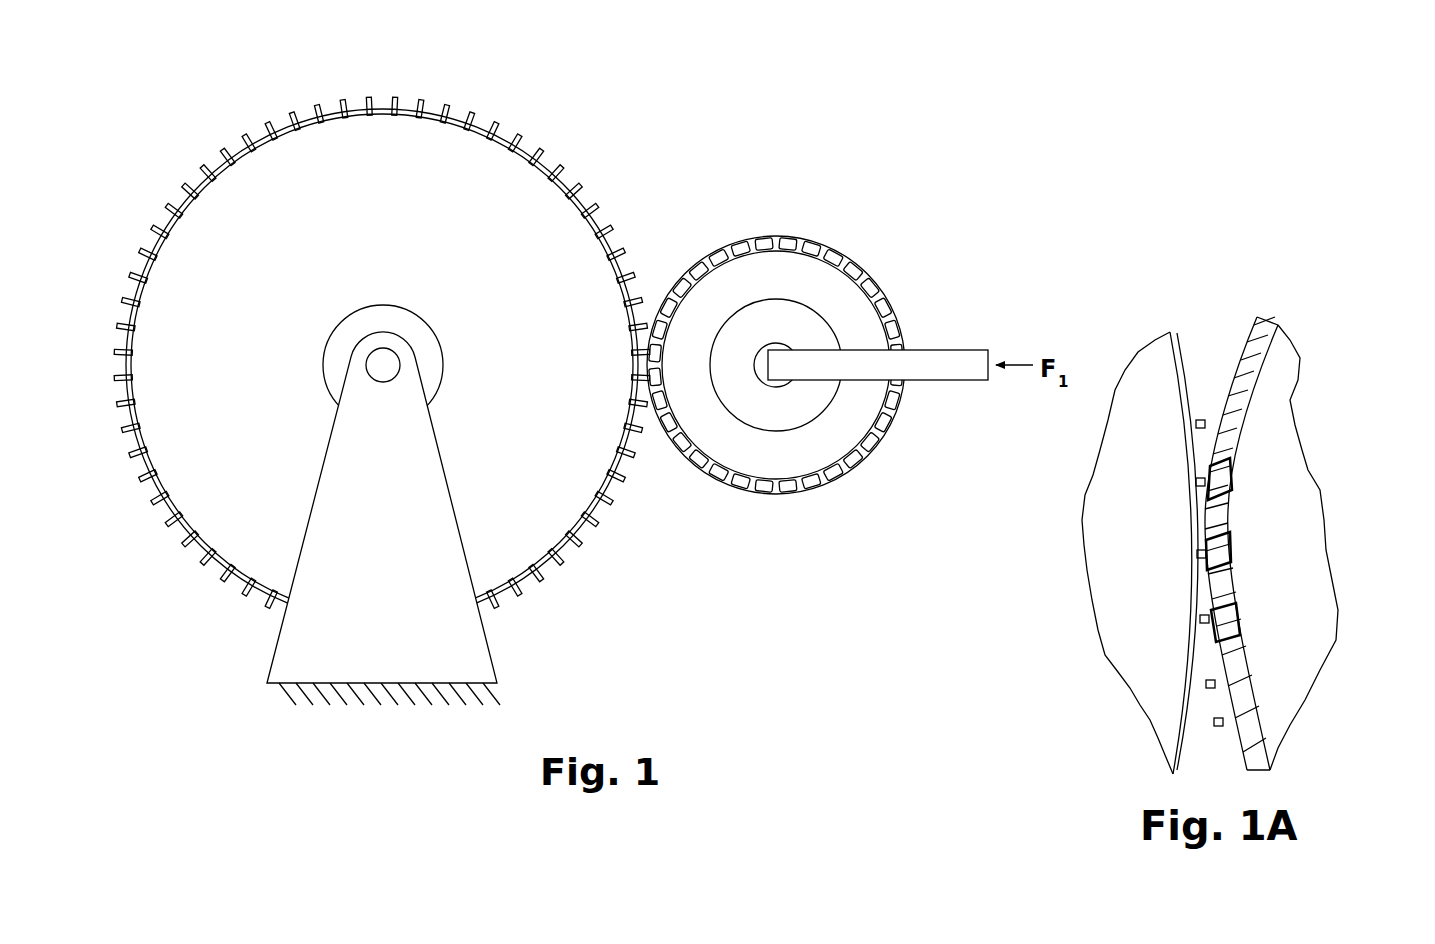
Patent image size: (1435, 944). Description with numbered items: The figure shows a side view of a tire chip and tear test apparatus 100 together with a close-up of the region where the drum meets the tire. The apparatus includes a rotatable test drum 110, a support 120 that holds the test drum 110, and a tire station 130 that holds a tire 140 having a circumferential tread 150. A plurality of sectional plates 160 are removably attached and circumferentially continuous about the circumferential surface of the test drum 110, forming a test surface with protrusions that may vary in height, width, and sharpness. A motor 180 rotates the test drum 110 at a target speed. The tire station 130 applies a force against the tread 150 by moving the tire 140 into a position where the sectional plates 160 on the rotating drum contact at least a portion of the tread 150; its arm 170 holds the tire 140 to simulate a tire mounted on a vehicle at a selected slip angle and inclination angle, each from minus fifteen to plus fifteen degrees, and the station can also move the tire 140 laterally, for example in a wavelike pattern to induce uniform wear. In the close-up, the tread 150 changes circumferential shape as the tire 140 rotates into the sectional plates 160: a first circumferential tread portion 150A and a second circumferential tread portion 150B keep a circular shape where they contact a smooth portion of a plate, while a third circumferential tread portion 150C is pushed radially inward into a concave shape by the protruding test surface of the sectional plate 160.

In FIG. 1, the tire chip and tear test apparatus 100 is at (210, 123).
In FIG. 1, the rotatable test drum 110 is at (443, 148).
In FIG. 1A, the rotatable test drum 110 is at (1143, 385).
In FIG. 1, the support 120 is at (325, 630).
In FIG. 1, the tire station 130 is at (841, 178).
In FIG. 1, the tire 140 is at (828, 283).
In FIG. 1A, the tire 140 is at (1280, 425).
In FIG. 1, the circumferential tread 150 is at (851, 465).
In FIG. 1A, the circumferential tread 150 is at (1275, 322).
In FIG. 1A, the first circumferential tread portion 150A is at (1212, 480).
In FIG. 1A, the second circumferential tread portion 150B is at (1212, 620).
In FIG. 1A, the third circumferential tread portion 150C is at (1230, 553).
In FIG. 1, the sectional plates 160 is at (595, 207).
In FIG. 1A, the sectional plates 160 is at (1207, 425).
In FIG. 1, the arm 170 is at (935, 365).
In FIG. 1, the motor 180 is at (336, 356).